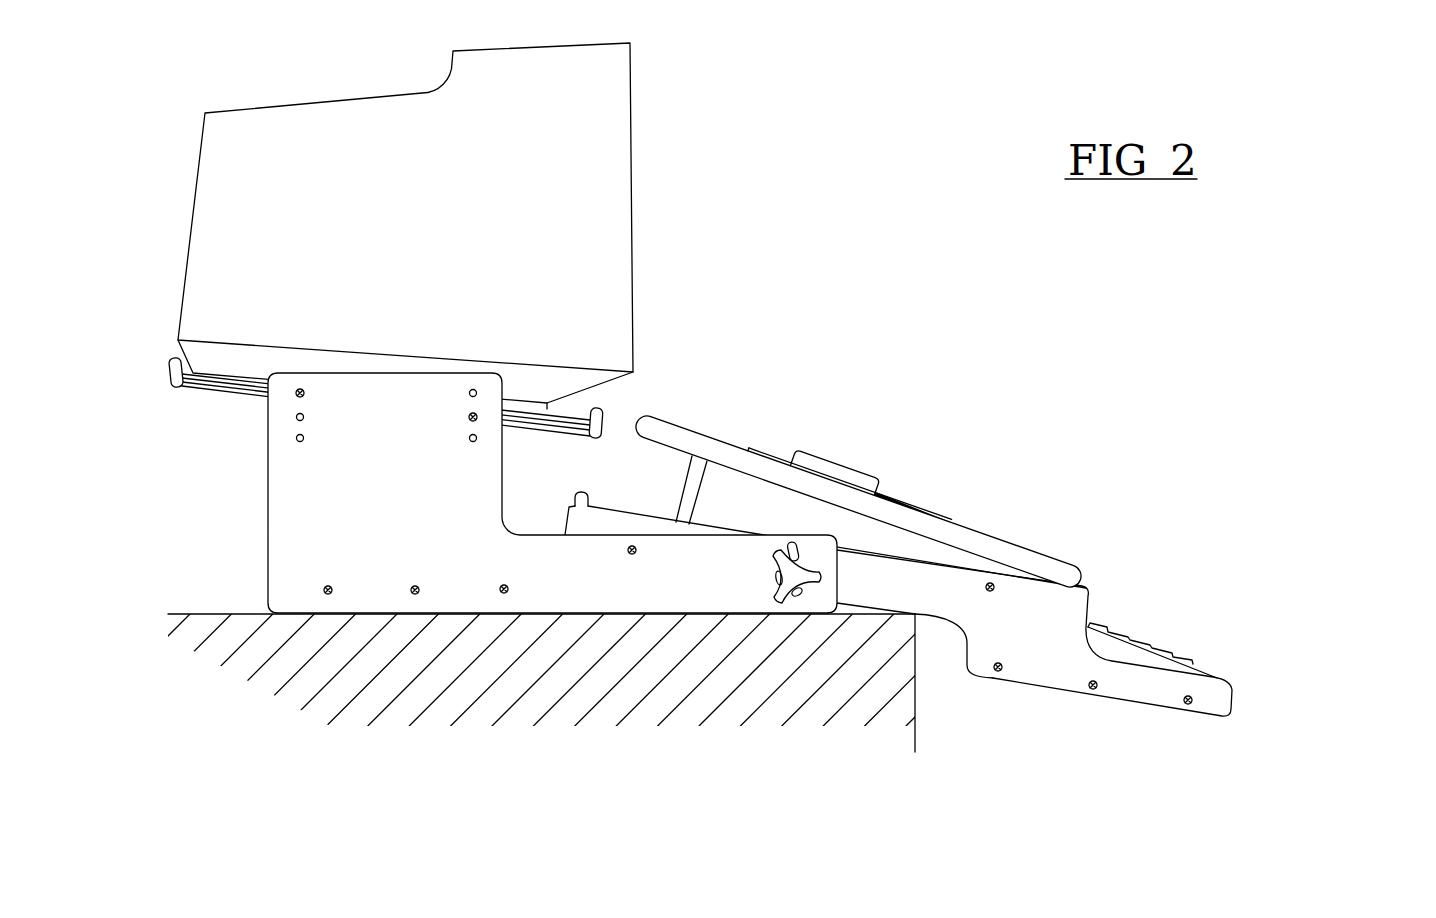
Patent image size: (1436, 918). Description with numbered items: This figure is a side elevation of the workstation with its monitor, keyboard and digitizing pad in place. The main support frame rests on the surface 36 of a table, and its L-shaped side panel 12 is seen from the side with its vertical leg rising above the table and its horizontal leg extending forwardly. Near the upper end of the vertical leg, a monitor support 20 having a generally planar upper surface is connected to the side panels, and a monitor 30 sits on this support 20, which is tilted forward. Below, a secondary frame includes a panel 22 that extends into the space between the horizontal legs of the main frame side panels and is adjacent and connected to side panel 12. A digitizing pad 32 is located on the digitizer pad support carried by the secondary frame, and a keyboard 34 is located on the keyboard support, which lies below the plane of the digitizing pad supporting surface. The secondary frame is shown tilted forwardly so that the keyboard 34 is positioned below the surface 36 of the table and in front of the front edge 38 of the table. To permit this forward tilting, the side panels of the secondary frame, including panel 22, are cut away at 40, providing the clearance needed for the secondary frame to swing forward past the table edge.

The side panel 12 is at (207, 514).
The monitor support 20 is at (78, 437).
The secondary frame panel 22 is at (1408, 798).
The monitor 30 is at (553, 233).
The digitizing pad 32 is at (896, 501).
The keyboard 34 is at (1200, 640).
The table surface 36 is at (519, 639).
The front edge of the table 38 is at (1019, 707).
The cut-away 40 is at (988, 682).